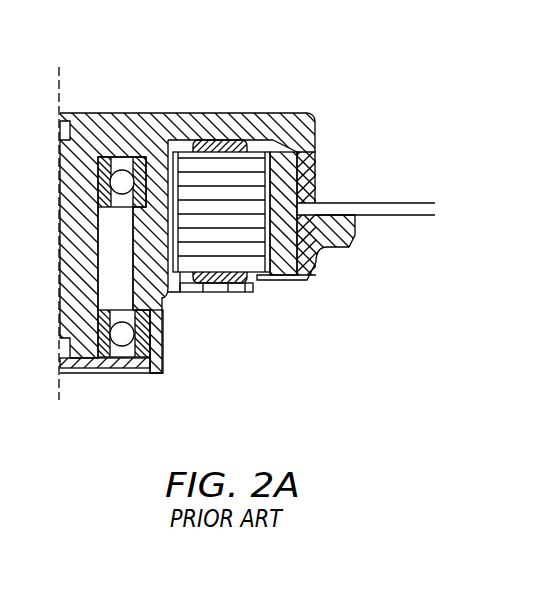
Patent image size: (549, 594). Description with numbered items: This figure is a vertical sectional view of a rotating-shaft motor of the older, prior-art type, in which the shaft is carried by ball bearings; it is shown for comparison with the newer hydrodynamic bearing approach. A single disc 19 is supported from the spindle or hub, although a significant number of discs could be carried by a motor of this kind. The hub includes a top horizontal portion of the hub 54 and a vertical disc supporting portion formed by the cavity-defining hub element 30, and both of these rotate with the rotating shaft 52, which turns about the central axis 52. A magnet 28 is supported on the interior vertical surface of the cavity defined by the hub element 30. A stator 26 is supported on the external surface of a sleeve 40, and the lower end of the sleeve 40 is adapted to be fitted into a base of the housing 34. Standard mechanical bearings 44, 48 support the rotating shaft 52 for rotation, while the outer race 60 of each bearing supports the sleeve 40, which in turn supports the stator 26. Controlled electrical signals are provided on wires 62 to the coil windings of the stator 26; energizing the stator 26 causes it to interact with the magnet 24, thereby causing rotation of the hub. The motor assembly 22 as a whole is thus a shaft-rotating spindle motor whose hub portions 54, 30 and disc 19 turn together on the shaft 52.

The disc 19 is at (412, 208).
The motor 22 is at (213, 113).
The magnet 24 is at (284, 197).
The stator 26 is at (243, 217).
The magnet 28 is at (305, 168).
The hub element 30 is at (296, 190).
The housing 34 is at (165, 375).
The sleeve 40 is at (155, 335).
The mechanical bearing 44 is at (102, 347).
The mechanical bearing 48 is at (119, 210).
The rotating shaft 52 is at (63, 86).
The top horizontal portion of the hub 54 is at (238, 117).
The outer race 60 is at (142, 159).
The wires 62 is at (239, 294).